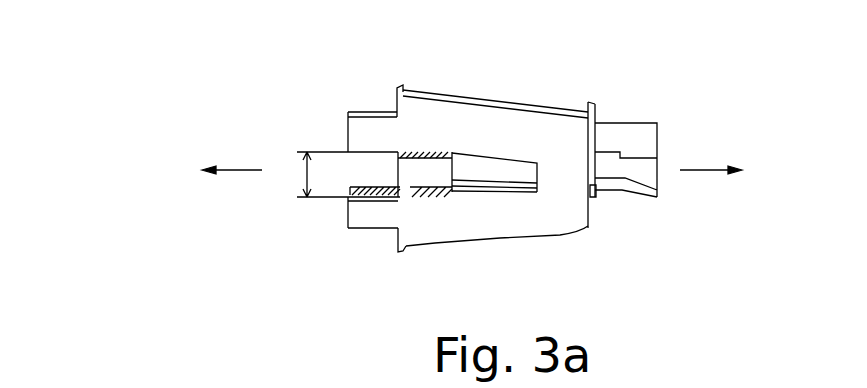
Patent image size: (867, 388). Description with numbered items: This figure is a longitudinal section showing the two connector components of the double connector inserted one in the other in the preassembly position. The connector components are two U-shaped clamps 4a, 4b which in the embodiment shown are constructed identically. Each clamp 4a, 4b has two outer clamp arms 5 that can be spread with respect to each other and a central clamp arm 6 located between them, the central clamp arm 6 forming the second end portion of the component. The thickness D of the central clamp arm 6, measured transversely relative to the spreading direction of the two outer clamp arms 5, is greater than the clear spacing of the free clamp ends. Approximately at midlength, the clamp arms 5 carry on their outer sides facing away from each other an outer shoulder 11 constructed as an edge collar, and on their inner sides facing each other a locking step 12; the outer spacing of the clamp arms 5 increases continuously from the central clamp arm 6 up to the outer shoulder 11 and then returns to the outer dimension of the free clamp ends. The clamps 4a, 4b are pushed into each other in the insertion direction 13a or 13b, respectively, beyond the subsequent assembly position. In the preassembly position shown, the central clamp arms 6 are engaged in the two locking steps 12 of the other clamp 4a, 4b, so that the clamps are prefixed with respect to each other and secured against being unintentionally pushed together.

The clamp 4a is at (648, 128).
The clamp 4b is at (365, 108).
The outer clamp arm 5 is at (420, 119).
The central clamp arm 6 is at (430, 178).
The outer shoulder 11 is at (392, 97).
The locking step 12 is at (398, 151).
The insertion direction 13a is at (705, 170).
The insertion direction 13b is at (236, 169).
The thickness of the central clamp arm D is at (297, 174).